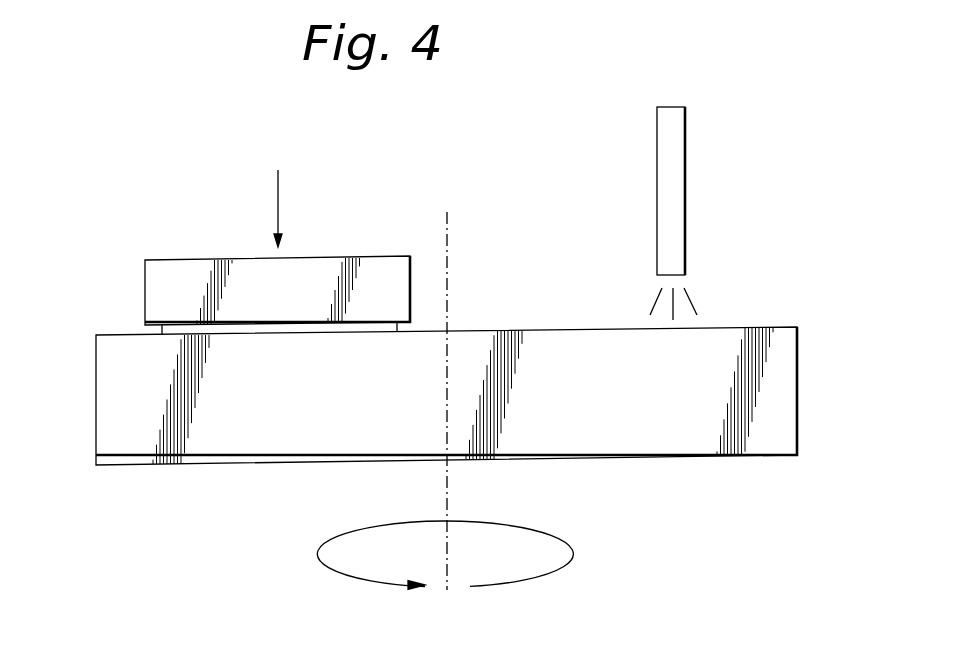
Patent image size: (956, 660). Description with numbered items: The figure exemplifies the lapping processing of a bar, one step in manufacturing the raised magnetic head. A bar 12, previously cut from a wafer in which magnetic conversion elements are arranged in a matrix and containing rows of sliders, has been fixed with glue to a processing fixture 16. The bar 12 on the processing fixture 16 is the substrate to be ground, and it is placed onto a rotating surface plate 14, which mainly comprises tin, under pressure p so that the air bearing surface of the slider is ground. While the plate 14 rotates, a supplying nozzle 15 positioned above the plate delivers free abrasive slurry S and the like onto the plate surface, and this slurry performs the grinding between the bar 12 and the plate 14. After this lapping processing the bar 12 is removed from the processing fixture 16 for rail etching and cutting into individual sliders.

The bar 12 is at (142, 331).
The plate 14 is at (683, 442).
The supplying nozzle 15 is at (672, 165).
The processing fixture 16 is at (207, 278).
The pressure p is at (278, 195).
The free abrasive slurry S is at (707, 302).